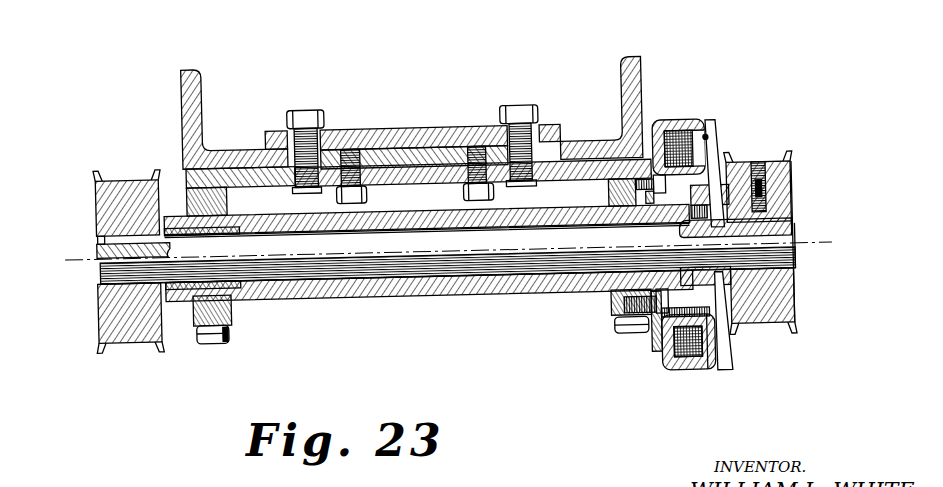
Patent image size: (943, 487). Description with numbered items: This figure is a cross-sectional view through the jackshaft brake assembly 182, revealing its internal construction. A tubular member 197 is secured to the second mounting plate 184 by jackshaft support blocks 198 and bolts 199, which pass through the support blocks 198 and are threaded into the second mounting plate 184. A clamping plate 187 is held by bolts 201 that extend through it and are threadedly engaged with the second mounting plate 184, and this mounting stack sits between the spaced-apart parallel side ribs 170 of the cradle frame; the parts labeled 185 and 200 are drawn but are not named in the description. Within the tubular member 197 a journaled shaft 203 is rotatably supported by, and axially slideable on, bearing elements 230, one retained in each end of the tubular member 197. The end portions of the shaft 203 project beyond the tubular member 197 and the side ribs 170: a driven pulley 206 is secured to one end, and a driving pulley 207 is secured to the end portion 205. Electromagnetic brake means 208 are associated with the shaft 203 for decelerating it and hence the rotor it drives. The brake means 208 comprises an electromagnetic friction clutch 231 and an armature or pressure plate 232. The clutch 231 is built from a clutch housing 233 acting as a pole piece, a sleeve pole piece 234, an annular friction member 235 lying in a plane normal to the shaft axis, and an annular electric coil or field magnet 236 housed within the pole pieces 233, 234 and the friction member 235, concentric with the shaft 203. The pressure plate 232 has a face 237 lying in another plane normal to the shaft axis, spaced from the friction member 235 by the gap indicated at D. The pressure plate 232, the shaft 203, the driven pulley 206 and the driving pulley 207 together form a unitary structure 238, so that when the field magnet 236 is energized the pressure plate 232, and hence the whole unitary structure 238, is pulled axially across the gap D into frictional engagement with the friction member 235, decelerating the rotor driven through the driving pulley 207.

The side ribs 170 is at (187, 88).
The jackshaft brake assembly 182 is at (218, 369).
The second mounting plate 184 is at (562, 168).
The middle plate 185 is at (387, 157).
The clamping plate 187 is at (425, 130).
The tubular member 197 is at (376, 290).
The jackshaft support blocks 198 is at (226, 313).
The bolts 199 is at (216, 338).
The bolt 200 is at (467, 194).
The bolts 201 is at (306, 118).
The journaled shaft 203 is at (401, 270).
The end portion 205 is at (109, 283).
The driven pulley 206 is at (780, 314).
The driving pulley 207 is at (126, 180).
The electromagnetic brake means 208 is at (757, 86).
The bearing elements 230 is at (236, 285).
The electromagnetic friction clutch 231 is at (662, 371).
The pressure plate 232 is at (720, 127).
The clutch housing 233 is at (672, 362).
The sleeve pole piece 234 is at (703, 322).
The annular friction member 235 is at (710, 362).
The annular field magnet 236 is at (683, 350).
The face 237 is at (710, 143).
The unitary structure 238 is at (808, 264).
The spacing D is at (708, 112).